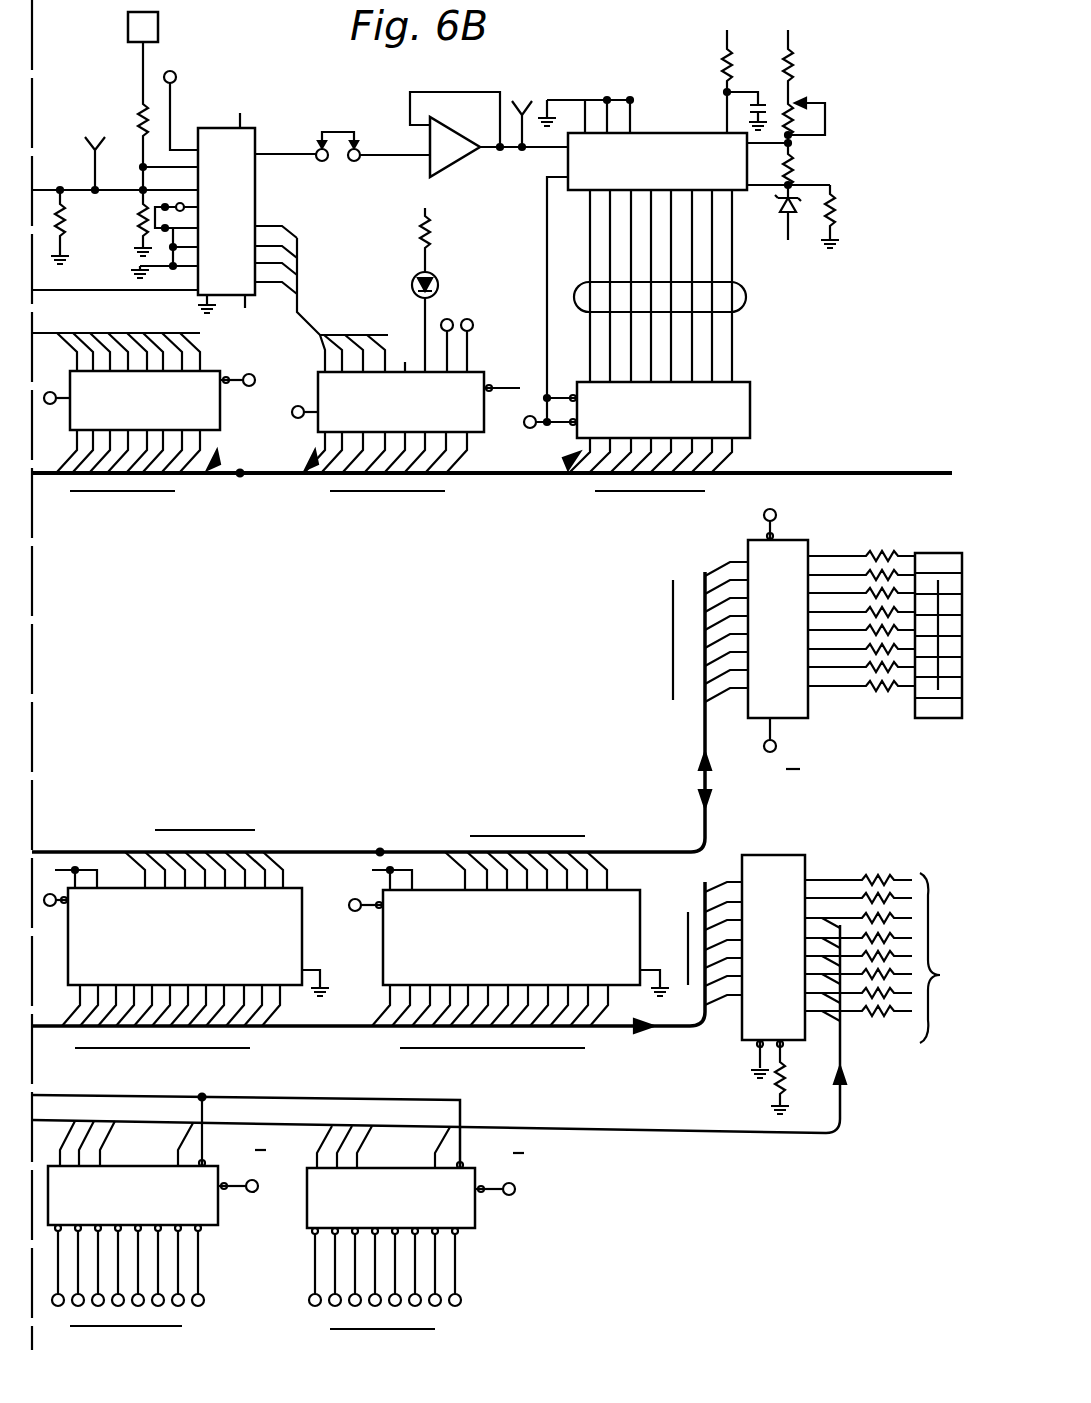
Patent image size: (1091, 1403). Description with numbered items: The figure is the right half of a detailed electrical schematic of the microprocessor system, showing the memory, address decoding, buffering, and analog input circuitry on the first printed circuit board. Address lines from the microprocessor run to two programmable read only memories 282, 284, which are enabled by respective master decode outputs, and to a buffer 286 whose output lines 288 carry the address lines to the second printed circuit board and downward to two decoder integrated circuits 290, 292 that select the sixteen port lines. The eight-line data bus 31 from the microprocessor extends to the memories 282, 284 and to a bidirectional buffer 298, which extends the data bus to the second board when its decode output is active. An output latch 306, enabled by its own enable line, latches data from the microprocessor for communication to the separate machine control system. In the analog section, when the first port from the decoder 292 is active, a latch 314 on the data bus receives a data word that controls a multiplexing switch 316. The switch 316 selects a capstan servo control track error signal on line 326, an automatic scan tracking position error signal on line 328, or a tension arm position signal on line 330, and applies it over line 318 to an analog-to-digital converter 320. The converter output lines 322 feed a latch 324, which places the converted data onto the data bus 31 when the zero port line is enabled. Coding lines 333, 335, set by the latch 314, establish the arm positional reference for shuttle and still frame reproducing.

The data bus 31 is at (241, 474).
The programmable read only memory 282 is at (302, 900).
The programmable read only memory 284 is at (640, 890).
The buffer 286 is at (790, 846).
The output lines 288 is at (940, 980).
The decoder integrated circuit 290 is at (475, 1218).
The decoder integrated circuit 292 is at (218, 1215).
The bidirectional buffer 298 is at (800, 718).
The output latch 306 is at (220, 404).
The latch 314 is at (484, 428).
The multiplexing switch 316 is at (257, 178).
The line 318 is at (297, 152).
The analog-to-digital converter 320 is at (522, 165).
The output lines 322 is at (746, 300).
The latch 324 is at (750, 395).
The line 326 is at (172, 106).
The line 328 is at (138, 66).
The line 330 is at (118, 196).
The coding line 333 is at (458, 330).
The coding line 335 is at (462, 350).